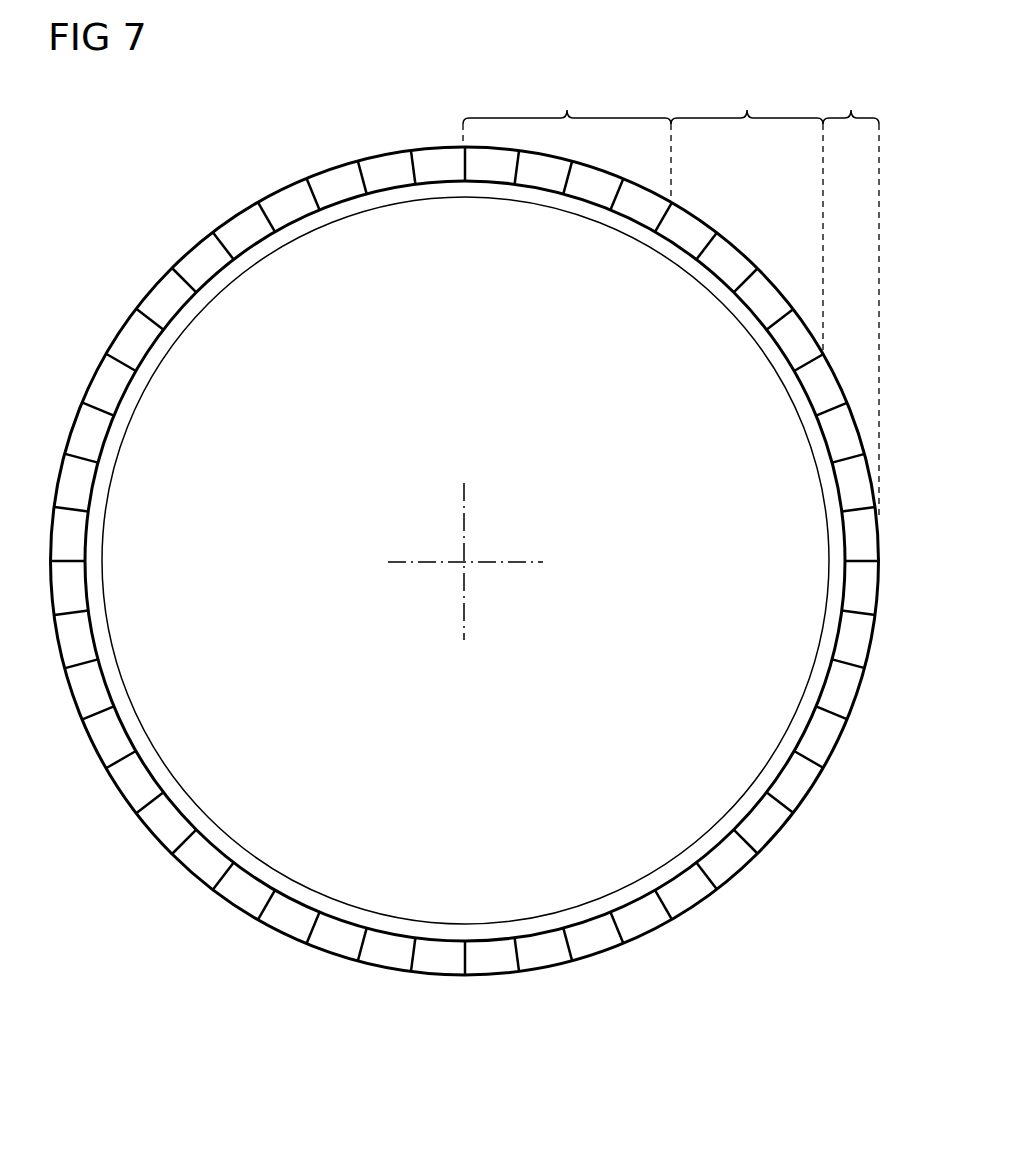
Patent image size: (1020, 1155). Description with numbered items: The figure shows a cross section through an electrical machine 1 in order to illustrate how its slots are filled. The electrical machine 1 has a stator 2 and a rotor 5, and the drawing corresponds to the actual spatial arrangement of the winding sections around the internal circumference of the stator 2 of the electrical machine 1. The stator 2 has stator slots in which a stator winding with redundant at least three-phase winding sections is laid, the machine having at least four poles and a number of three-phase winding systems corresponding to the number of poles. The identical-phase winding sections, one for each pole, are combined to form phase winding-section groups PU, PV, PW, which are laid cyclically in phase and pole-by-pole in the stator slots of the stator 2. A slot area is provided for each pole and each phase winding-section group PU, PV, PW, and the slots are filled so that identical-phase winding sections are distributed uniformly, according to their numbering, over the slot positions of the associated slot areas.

The electrical machine 1 is at (216, 141).
The stator 2 is at (738, 249).
The rotor 5 is at (462, 924).
The phase winding-section group PU is at (567, 140).
The phase winding-section group PW is at (747, 215).
The phase winding-section group PV is at (851, 298).